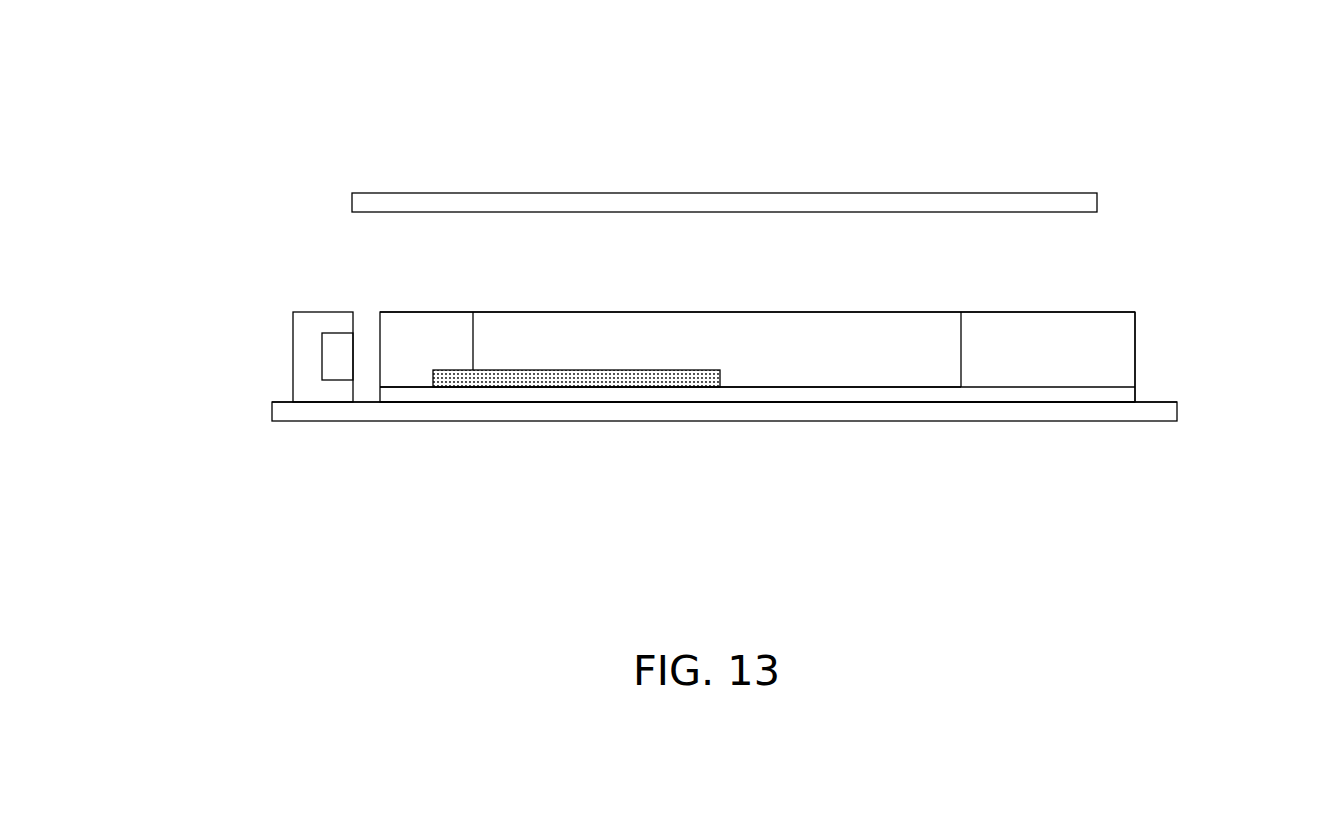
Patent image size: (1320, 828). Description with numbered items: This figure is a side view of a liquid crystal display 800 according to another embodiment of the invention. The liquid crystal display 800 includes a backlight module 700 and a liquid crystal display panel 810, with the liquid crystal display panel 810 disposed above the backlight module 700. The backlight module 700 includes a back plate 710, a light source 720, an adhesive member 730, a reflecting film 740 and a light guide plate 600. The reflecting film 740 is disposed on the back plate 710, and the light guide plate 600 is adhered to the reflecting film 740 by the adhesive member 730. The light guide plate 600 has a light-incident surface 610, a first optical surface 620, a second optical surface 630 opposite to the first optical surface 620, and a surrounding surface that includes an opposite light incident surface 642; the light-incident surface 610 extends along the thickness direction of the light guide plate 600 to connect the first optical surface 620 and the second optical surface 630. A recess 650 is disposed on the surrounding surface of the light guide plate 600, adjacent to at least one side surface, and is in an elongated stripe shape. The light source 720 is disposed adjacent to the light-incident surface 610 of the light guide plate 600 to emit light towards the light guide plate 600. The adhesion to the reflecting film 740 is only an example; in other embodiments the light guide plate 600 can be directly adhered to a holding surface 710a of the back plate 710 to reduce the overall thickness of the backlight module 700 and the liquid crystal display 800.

The liquid crystal display 800 is at (206, 132).
The liquid crystal display panel 810 is at (742, 202).
The backlight module 700 is at (316, 264).
The light source 720 is at (305, 363).
The light guide plate 600 is at (491, 292).
The second optical surface 630 is at (714, 310).
The opposite light incident surface 642 is at (1135, 339).
The light-incident surface 610 is at (410, 360).
The recess 650 is at (530, 370).
The adhesive member 730 is at (618, 387).
The first optical surface 620 is at (747, 387).
The reflecting film 740 is at (840, 395).
The back plate 710 is at (1160, 412).
The holding surface 710a is at (1157, 402).